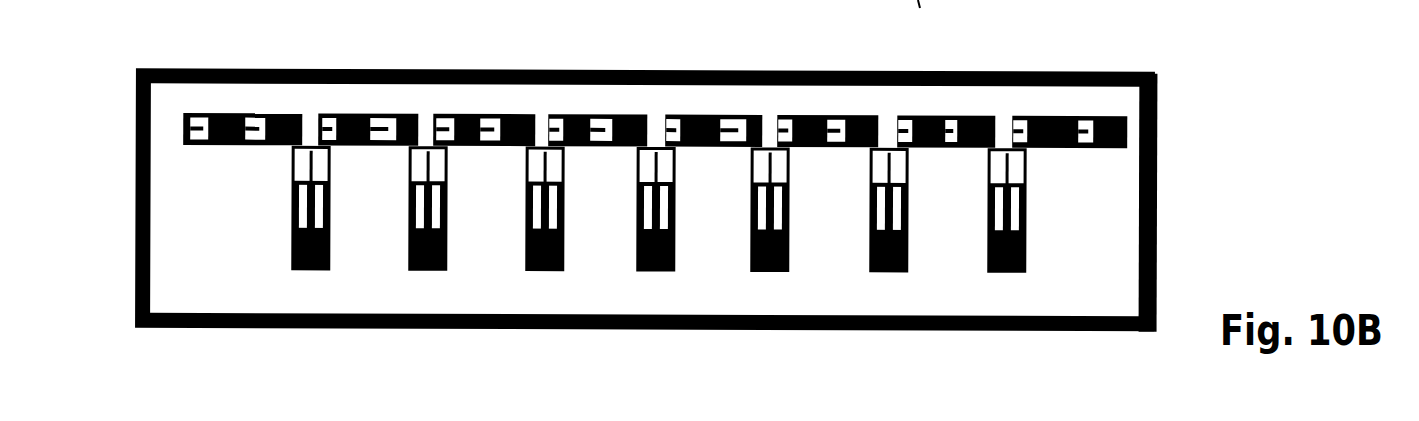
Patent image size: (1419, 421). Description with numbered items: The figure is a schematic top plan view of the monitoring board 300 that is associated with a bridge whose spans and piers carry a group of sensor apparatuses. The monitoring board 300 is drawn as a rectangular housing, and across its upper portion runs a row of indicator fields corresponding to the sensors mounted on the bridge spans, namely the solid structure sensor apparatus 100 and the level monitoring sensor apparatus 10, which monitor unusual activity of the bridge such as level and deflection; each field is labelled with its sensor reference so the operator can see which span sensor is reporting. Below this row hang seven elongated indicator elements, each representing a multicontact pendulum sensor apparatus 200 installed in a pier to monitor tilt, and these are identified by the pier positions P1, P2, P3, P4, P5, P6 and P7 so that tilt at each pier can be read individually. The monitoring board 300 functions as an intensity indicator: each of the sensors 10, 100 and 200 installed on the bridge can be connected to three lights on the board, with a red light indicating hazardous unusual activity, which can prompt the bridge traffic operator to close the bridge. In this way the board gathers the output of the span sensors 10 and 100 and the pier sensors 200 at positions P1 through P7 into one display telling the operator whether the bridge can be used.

The monitoring board 300 is at (1018, 73).
The solid structure sensor apparatus 100 is at (218, 110).
The level monitoring sensor apparatus 10 is at (270, 110).
The multicontact pendulum sensor apparatus 200 is at (300, 178).
The probe position 1 P1 is at (290, 242).
The probe position 2 P2 is at (405, 252).
The probe position 3 P3 is at (520, 247).
The probe position 4 P4 is at (637, 258).
The probe position 5 P5 is at (740, 258).
The probe position 6 P6 is at (855, 262).
The probe position 7 P7 is at (977, 260).